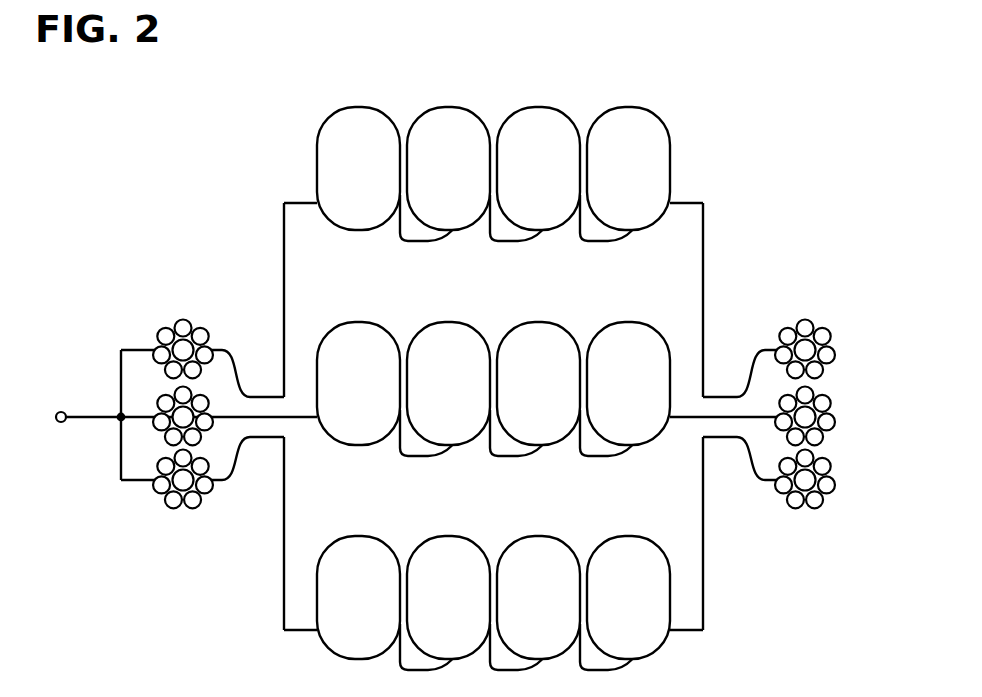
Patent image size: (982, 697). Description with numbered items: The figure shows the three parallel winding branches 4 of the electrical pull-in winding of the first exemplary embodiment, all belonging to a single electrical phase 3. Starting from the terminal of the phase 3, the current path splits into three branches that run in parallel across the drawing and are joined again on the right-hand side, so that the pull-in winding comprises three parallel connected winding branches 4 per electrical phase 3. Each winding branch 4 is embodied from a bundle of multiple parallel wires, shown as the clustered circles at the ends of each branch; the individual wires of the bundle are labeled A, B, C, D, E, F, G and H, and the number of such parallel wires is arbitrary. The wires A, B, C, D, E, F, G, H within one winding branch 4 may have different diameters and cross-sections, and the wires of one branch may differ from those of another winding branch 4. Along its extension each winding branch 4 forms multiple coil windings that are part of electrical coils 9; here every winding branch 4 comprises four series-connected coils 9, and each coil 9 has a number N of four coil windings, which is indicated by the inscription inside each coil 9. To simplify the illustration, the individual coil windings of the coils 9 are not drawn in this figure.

The electrical phase 3 is at (61, 407).
The winding branch 4 is at (306, 110).
The electrical coil 9 is at (359, 107).
The parallel wire A is at (180, 321).
The parallel wire B is at (202, 328).
The parallel wire C is at (212, 352).
The parallel wire D is at (195, 350).
The parallel wire E is at (199, 376).
The parallel wire F is at (166, 373).
The parallel wire G is at (156, 351).
The parallel wire H is at (160, 331).